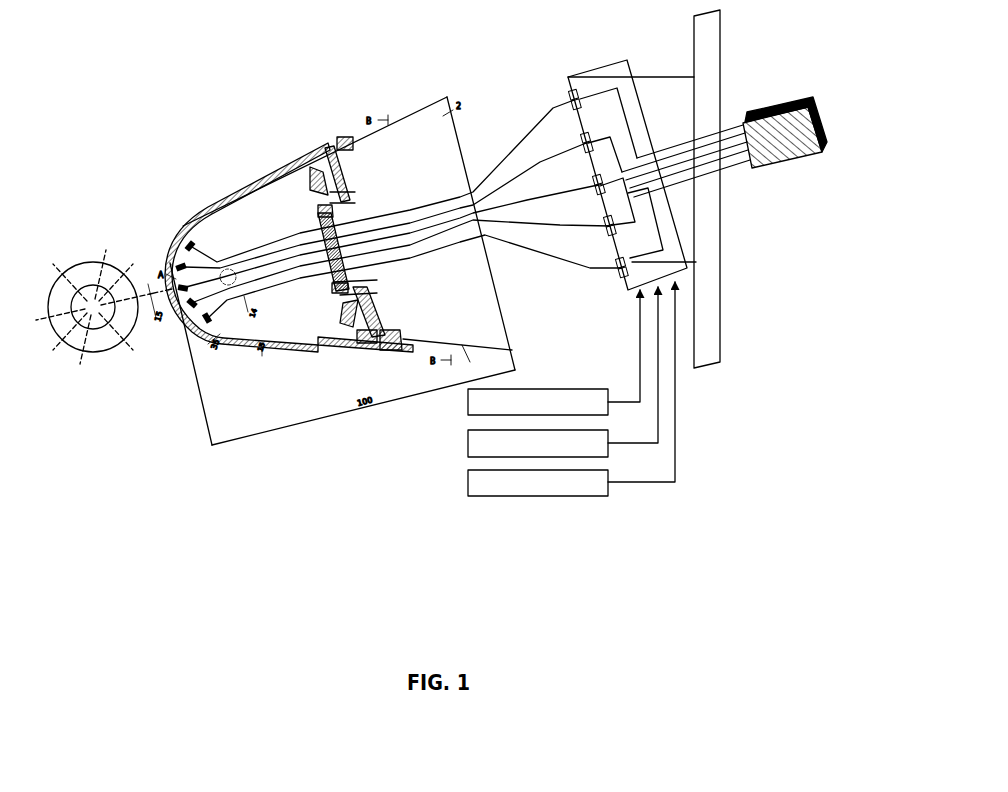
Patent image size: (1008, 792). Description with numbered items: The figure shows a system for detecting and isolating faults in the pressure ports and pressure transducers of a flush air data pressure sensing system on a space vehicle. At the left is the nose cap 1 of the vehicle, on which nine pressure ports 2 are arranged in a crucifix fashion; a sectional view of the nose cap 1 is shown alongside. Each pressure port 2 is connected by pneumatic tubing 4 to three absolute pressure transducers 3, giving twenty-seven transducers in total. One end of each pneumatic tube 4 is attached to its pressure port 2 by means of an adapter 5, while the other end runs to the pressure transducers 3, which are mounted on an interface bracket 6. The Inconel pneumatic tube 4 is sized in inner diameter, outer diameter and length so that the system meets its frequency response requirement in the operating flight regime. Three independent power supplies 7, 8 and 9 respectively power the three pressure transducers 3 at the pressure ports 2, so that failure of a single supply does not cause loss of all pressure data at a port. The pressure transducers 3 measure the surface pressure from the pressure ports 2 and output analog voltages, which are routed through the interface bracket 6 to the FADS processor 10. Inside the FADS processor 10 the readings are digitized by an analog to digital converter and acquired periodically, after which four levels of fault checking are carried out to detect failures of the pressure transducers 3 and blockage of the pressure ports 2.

The nose cap 1 is at (247, 191).
The pressure port 2 is at (181, 240).
The pressure transducer 3 is at (567, 92).
The pneumatic tubing 4 is at (513, 147).
The adapter 5 is at (246, 338).
The interface bracket 6 is at (626, 57).
The power supply 7 is at (467, 405).
The power supply 8 is at (467, 446).
The power supply 9 is at (467, 485).
The FADS processor 10 is at (789, 158).